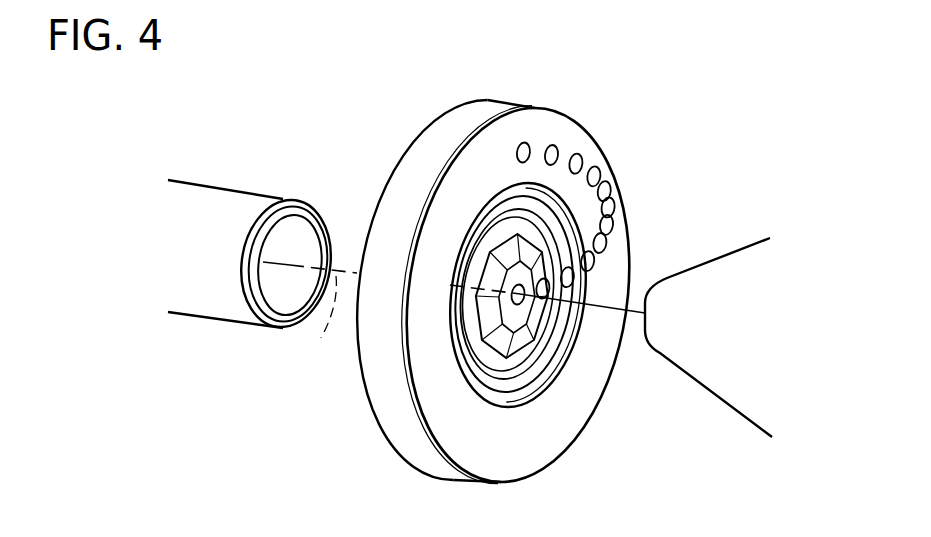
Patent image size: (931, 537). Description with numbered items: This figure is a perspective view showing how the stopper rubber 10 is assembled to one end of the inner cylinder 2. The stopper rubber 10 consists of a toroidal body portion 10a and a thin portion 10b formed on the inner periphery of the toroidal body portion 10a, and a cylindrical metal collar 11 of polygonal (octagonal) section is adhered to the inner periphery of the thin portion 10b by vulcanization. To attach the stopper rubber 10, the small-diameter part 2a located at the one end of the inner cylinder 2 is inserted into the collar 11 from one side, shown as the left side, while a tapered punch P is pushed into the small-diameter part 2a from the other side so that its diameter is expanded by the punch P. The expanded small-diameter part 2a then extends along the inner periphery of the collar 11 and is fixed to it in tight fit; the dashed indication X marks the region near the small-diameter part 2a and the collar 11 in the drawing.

The inner cylinder 2 is at (216, 177).
The small-diameter part 2a is at (295, 207).
The stopper rubber 10 is at (511, 257).
The toroidal body portion 10a is at (578, 145).
The thin portion 10b is at (535, 223).
The collar 11 is at (510, 320).
The punch P is at (732, 262).
The gap X is at (324, 326).